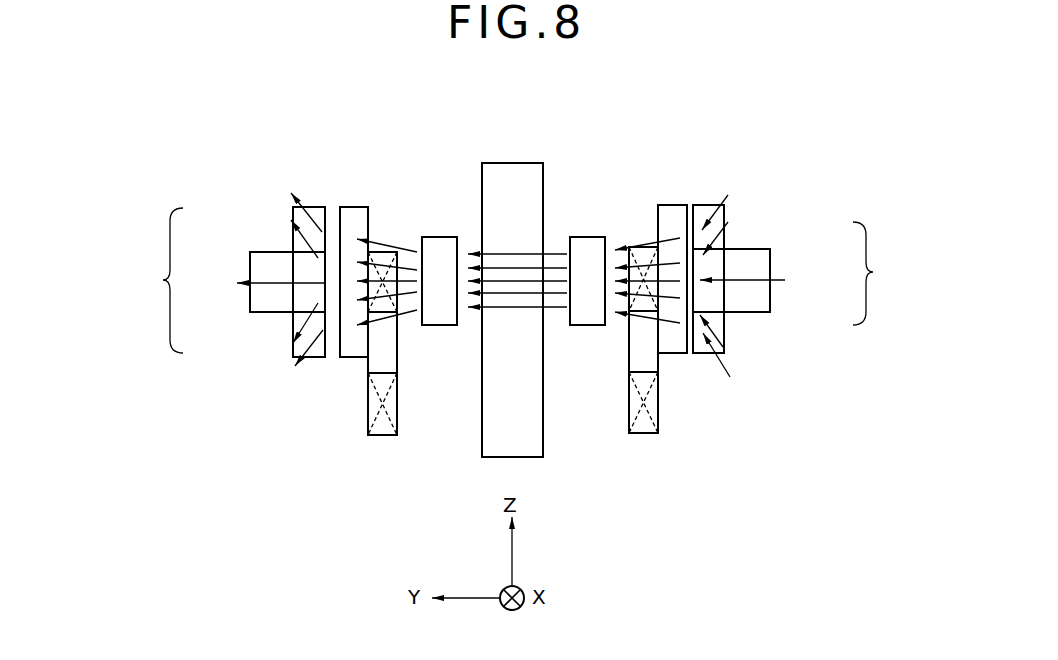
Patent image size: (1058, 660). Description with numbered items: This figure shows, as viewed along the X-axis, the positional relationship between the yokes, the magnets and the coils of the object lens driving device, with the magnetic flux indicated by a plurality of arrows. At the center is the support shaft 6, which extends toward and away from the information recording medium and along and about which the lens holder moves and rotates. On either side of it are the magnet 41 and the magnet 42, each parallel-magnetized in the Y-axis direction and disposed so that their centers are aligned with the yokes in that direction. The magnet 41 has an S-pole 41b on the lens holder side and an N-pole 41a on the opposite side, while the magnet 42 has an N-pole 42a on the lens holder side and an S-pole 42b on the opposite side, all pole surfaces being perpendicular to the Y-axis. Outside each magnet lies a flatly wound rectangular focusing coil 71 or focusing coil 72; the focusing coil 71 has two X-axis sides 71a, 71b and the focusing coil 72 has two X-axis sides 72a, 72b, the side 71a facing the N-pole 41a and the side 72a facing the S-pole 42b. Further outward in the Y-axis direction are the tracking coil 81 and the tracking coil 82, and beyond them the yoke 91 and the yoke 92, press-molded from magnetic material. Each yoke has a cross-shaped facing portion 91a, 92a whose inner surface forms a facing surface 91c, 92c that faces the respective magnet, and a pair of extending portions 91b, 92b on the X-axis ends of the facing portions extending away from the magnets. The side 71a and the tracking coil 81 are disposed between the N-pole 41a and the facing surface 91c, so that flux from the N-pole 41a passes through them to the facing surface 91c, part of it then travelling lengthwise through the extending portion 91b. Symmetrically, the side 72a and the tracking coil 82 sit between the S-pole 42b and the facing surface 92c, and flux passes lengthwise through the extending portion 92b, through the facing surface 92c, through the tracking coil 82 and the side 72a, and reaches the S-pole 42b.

The support shaft 6 is at (517, 178).
The magnet 41 is at (440, 238).
The N-pole 41a is at (422, 324).
The S-pole 41b is at (462, 324).
The magnet 42 is at (590, 237).
The N-pole 42a is at (570, 324).
The S-pole 42b is at (612, 324).
The focusing coil 71 is at (365, 401).
The side of focusing coil 71a is at (388, 262).
The side of focusing coil 71b is at (378, 437).
The focusing coil 72 is at (668, 408).
The side of focusing coil 72a is at (645, 258).
The side of focusing coil 72b is at (640, 437).
The tracking coil 81 is at (357, 212).
The tracking coil 82 is at (672, 213).
The yoke 91 is at (159, 280).
The facing portion 91a is at (303, 299).
The extending portions 91b is at (268, 252).
The facing surface 91c is at (323, 355).
The yoke 92 is at (878, 273).
The facing portion 92a is at (713, 267).
The extending portions 92b is at (770, 295).
The facing surface 92c is at (728, 355).